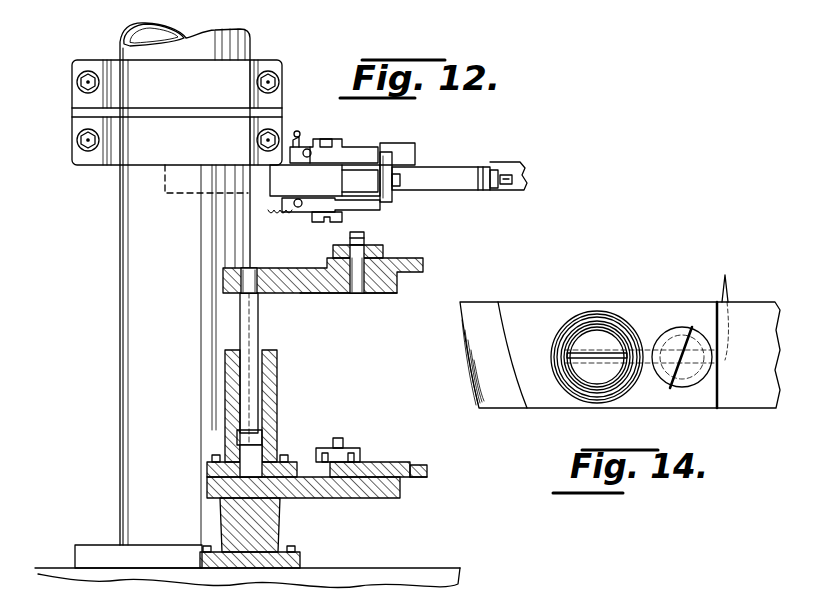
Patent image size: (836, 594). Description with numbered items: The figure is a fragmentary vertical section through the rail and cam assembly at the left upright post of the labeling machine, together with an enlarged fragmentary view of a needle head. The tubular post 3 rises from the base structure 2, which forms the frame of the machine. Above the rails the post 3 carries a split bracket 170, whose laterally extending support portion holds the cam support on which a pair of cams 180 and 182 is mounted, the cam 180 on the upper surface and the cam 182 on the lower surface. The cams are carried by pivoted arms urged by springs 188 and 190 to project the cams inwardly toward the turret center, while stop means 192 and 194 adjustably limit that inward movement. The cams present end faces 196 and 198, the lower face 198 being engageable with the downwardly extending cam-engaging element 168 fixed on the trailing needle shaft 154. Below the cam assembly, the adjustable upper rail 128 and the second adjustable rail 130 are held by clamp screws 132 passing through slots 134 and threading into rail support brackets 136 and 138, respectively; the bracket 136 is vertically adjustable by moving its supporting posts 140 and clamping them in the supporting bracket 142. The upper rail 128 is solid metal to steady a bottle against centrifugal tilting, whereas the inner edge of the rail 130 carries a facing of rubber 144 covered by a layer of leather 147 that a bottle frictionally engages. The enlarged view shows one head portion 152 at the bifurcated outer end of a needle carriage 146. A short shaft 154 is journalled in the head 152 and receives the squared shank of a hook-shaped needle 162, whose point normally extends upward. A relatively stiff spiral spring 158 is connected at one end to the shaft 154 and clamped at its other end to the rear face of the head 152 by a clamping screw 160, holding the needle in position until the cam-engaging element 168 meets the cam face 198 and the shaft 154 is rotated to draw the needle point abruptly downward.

In FIG. 12, the base structure 2 is at (350, 570).
In FIG. 12, the tubular post 3 is at (125, 272).
In FIG. 12, the upper rail 128 is at (413, 262).
In FIG. 12, the second adjustable rail 130 is at (391, 462).
In FIG. 12, the clamp screw 132 is at (366, 238).
In FIG. 12, the slot 134 is at (342, 252).
In FIG. 12, the rail support bracket 136 is at (348, 294).
In FIG. 12, the rail support bracket 138 is at (335, 498).
In FIG. 12, the supporting post 140 is at (243, 318).
In FIG. 12, the supporting bracket 142 is at (276, 438).
In FIG. 12, the facing of rubber 144 is at (412, 480).
In FIG. 12, the needle carriage 146 is at (515, 151).
In FIG. 12, the layer of leather 147 is at (424, 465).
In FIG. 12, the head portion 152 is at (466, 172).
In FIG. 14, the head portion 152 is at (528, 305).
In FIG. 12, the short shaft 154 is at (506, 190).
In FIG. 14, the short shaft 154 is at (605, 345).
In FIG. 12, the spiral spring 158 is at (497, 190).
In FIG. 14, the spiral spring 158 is at (565, 320).
In FIG. 14, the clamping screw 160 is at (680, 330).
In FIG. 12, the hook-shaped needle 162 is at (415, 168).
In FIG. 14, the hook-shaped needle 162 is at (730, 300).
In FIG. 12, the cam-engaging element 168 is at (385, 165).
In FIG. 12, the split bracket 170 is at (72, 92).
In FIG. 12, the cam 180 is at (407, 146).
In FIG. 12, the cam 182 is at (392, 198).
In FIG. 12, the spring 188 is at (296, 130).
In FIG. 12, the spring 190 is at (264, 196).
In FIG. 12, the stop means 192 is at (309, 150).
In FIG. 12, the stop means 194 is at (301, 210).
In FIG. 12, the end face 196 is at (398, 136).
In FIG. 12, the end face 198 is at (354, 197).